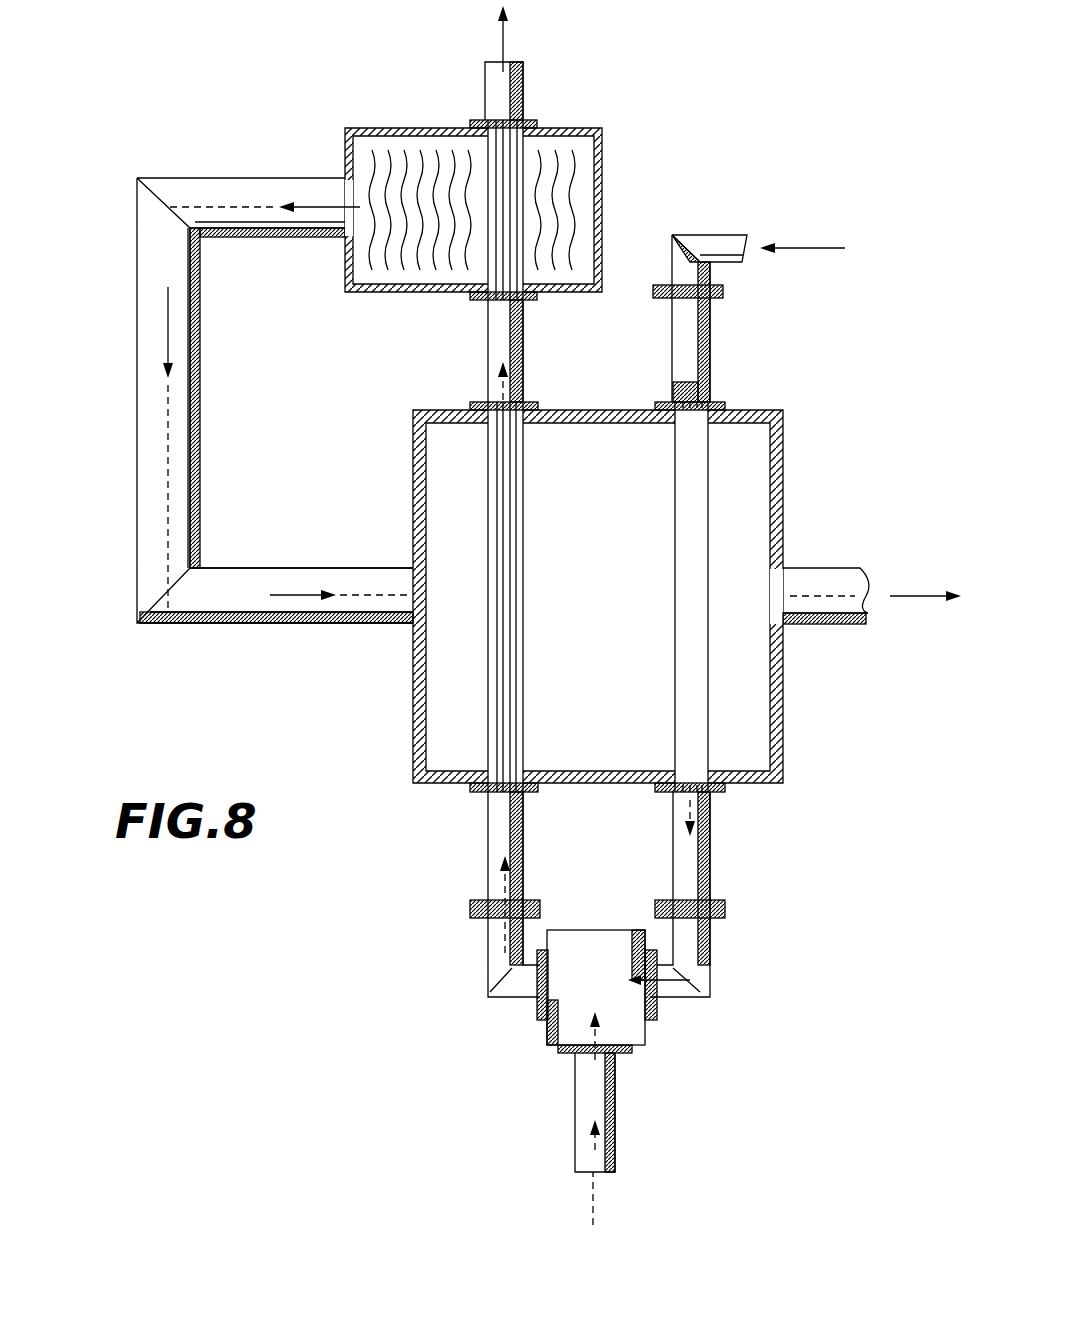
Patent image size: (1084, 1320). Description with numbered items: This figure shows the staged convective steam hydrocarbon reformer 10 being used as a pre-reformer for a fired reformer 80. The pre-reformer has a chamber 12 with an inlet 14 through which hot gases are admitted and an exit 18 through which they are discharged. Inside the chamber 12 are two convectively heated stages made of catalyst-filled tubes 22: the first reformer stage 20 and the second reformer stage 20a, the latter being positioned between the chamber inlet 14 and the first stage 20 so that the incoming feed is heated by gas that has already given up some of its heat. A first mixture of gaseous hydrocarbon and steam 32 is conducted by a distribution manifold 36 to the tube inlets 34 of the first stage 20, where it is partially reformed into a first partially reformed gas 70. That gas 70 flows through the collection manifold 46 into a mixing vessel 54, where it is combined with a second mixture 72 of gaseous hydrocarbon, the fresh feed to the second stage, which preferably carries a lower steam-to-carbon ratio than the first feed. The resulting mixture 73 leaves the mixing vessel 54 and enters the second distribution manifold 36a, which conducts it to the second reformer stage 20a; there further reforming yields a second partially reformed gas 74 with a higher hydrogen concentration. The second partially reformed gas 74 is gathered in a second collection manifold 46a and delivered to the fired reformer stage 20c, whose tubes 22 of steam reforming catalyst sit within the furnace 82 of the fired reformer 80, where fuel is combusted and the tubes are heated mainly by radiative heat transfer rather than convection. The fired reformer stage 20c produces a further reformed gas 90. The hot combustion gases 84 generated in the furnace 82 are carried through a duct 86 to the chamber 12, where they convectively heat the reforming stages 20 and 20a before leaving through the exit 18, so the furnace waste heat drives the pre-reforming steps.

The steam hydrocarbon reformer 10 is at (572, 542).
The chamber 12 is at (413, 717).
The inlet 14 is at (400, 613).
The exit 18 is at (780, 587).
The first reformer stage 20 is at (706, 468).
The second reformer stage 20a is at (523, 708).
The fired reformer stage 20c is at (530, 156).
The tubes 22 is at (505, 166).
The first mixture of gaseous hydrocarbon and steam 32 is at (808, 248).
The tube inlets 34 is at (680, 392).
The distribution manifold 36 is at (705, 332).
The second distribution manifold 36a is at (500, 848).
The collection manifold 46 is at (695, 870).
The second collection manifold 46a is at (495, 342).
The mixing vessel 54 is at (630, 1030).
The first partially reformed gas 70 is at (700, 822).
The second mixture of gaseous hydrocarbon 72 is at (593, 1035).
The mixture of first partially reformed gas and fresh feed 73 is at (504, 938).
The second partially reformed gas 74 is at (500, 388).
The fired reformer 80 is at (523, 176).
The furnace 82 is at (602, 196).
The hot combustion gases 84 is at (320, 204).
The duct 86 is at (140, 270).
The further reformed gas 90 is at (503, 40).